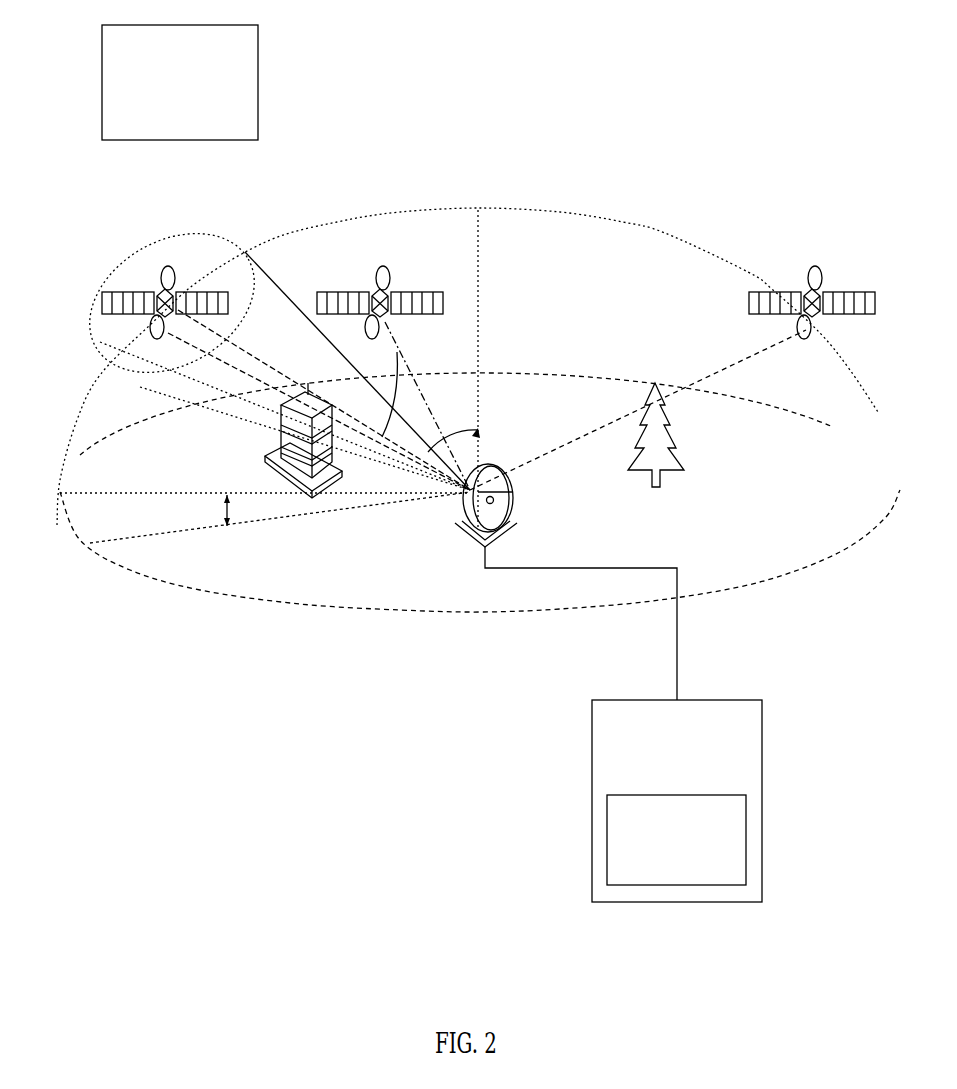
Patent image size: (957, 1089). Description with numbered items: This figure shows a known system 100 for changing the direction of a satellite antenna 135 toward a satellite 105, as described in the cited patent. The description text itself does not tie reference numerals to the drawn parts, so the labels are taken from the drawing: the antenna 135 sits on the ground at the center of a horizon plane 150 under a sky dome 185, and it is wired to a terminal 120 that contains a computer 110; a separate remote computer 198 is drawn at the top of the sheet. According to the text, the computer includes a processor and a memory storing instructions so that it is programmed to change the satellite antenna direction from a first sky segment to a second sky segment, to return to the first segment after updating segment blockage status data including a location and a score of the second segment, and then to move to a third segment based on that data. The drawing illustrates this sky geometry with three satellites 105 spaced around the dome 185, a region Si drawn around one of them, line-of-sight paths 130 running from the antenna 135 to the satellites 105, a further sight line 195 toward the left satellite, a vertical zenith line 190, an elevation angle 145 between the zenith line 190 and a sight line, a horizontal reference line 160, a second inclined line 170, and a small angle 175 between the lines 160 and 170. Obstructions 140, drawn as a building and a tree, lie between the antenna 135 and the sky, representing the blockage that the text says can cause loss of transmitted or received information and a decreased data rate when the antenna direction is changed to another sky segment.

The satellite communication system 100 is at (697, 118).
The satellite 105 is at (167, 266).
The computer 110 is at (665, 872).
The terminal 120 is at (665, 775).
The line of sight path 130 is at (397, 352).
The antenna 135 is at (461, 503).
The obstruction 140 is at (278, 443).
The elevation angle 145 is at (453, 432).
The horizon plane 150 is at (337, 607).
The horizontal reference line 160 is at (100, 497).
The minimum elevation line 170 is at (180, 537).
The minimum elevation angle 175 is at (222, 510).
The sky dome 185 is at (568, 212).
The zenith line 190 is at (480, 299).
The satellite line of sight 195 is at (231, 340).
The remote computer 198 is at (168, 128).
The satellite uncertainty region Si is at (88, 314).